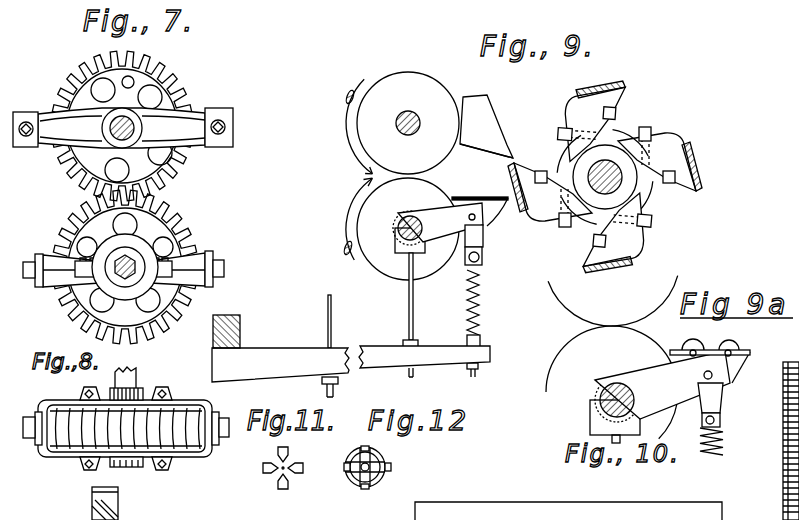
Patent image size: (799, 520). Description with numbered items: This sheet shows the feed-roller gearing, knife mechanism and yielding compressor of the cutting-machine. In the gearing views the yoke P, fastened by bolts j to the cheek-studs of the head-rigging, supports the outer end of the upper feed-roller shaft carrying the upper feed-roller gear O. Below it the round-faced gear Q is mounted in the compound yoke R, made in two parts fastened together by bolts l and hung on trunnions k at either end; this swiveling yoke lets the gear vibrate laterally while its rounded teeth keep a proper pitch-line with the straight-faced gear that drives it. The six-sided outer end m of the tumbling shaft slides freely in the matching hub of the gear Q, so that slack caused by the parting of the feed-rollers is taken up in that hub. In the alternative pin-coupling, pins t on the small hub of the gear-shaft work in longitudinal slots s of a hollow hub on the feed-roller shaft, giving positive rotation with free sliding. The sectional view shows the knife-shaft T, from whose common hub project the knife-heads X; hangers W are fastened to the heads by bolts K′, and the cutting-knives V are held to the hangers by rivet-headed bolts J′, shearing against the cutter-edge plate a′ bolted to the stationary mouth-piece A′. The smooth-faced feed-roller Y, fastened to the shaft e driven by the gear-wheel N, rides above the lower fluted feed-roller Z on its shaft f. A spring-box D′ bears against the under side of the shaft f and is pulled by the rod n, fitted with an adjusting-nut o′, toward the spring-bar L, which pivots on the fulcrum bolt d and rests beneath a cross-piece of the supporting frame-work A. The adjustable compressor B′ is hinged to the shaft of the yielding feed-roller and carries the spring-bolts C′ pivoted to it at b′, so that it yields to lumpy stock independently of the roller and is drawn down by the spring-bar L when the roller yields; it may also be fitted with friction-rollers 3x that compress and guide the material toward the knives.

In FIG. 7, the yoke P is at (172, 118).
In FIG. 7, the bolts j is at (37, 112).
In FIG. 7, the shaft e is at (114, 140).
In FIG. 9, the shaft e is at (417, 121).
In FIG. 7, the round-faced gear Q is at (112, 250).
In FIG. 8, the round-faced gear Q is at (183, 402).
In FIG. 7, the compound yoke R is at (193, 262).
In FIG. 8, the compound yoke R is at (44, 455).
In FIG. 7, the trunnions k is at (30, 262).
In FIG. 8, the trunnions k is at (29, 417).
In FIG. 7, the bolts l is at (78, 288).
In FIG. 8, the bolts l is at (80, 393).
In FIG. 7, the outer end of shaft m is at (125, 292).
In FIG. 8, the upper feed-roller gear O is at (118, 493).
In FIG. 9, the smooth-faced feed-roller Y is at (402, 123).
In FIG. 9a, the smooth-faced feed-roller Y is at (613, 301).
In FIG. 9, the fluted feed-roller Z is at (401, 229).
In FIG. 9a, the fluted feed-roller Z is at (612, 382).
In FIG. 9, the stationary mouth-piece A′ is at (486, 126).
In FIG. 9, the cutter-edge plate a′ is at (499, 150).
In FIG. 9, the spring-box D′ is at (397, 255).
In FIG. 9a, the spring-box D′ is at (590, 425).
In FIG. 9, the adjustable compressor B′ is at (488, 220).
In FIG. 9a, the adjustable compressor B′ is at (672, 385).
In FIG. 9, the shaft of fluted feed-roller f is at (400, 226).
In FIG. 9a, the shaft of fluted feed-roller f is at (600, 392).
In FIG. 9, the pivot b′ is at (484, 258).
In FIG. 9a, the pivot b′ is at (721, 422).
In FIG. 9, the spring-bolts C′ is at (482, 296).
In FIG. 9, the spring-box rod n is at (419, 315).
In FIG. 9, the adjusting-nut o′ is at (419, 343).
In FIG. 9, the fulcrum bolt d is at (336, 346).
In FIG. 9, the spring-bar L is at (351, 364).
In FIG. 9, the supporting frame-work A is at (226, 322).
In FIG. 9, the knife-shaft T is at (622, 179).
In FIG. 9, the knife-heads X is at (568, 106).
In FIG. 9, the bolts K′ is at (649, 131).
In FIG. 9, the rivet-headed bolt J′ is at (615, 108).
In FIG. 9, the cutting-knives V is at (612, 177).
In FIG. 9, the hangers W is at (616, 92).
In FIG. 9a, the gear-wheel N is at (791, 426).
In FIG. 9a, the friction-rollers 3x is at (711, 341).
In FIG. 11, the pins t is at (278, 449).
In FIG. 12, the longitudinal slots s is at (403, 432).